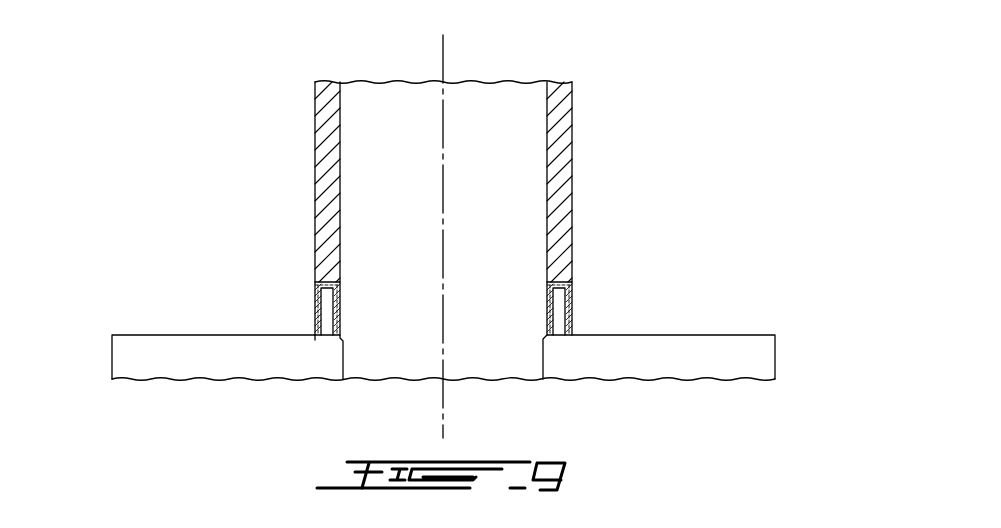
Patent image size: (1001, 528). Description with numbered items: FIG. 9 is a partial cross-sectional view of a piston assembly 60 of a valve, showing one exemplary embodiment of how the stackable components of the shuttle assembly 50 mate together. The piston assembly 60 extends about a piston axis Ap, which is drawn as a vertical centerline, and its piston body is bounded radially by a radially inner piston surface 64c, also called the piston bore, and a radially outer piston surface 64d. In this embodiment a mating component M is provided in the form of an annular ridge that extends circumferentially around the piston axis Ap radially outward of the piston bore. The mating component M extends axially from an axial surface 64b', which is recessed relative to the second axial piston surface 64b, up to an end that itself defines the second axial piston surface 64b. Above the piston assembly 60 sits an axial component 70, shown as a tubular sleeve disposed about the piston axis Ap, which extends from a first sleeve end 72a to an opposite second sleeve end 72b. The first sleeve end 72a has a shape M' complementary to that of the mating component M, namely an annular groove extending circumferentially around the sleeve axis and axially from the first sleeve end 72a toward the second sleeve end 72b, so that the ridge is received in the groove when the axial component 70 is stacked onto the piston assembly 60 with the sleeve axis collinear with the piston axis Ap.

The shuttle assembly 50 is at (812, 152).
The piston assembly 60 is at (481, 306).
The second axial piston surface 64b is at (602, 275).
The mating component M is at (602, 275).
The complementary shape M' is at (286, 308).
The axial surface 64b' is at (659, 321).
The radially inner piston surface 64c is at (343, 355).
The radially outer piston surface 64d is at (112, 355).
The axial component 70 is at (667, 138).
The first sleeve end 72a is at (317, 337).
The second sleeve end 72b is at (233, 42).
The piston axis Ap is at (445, 182).